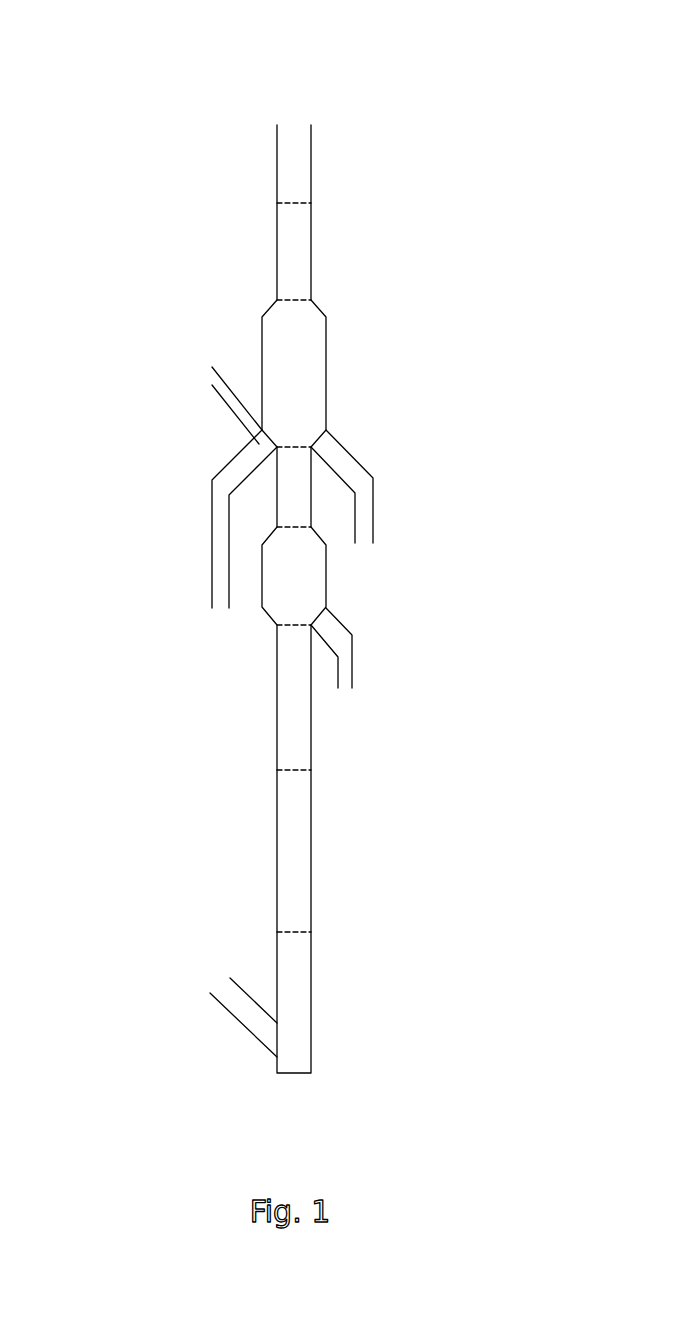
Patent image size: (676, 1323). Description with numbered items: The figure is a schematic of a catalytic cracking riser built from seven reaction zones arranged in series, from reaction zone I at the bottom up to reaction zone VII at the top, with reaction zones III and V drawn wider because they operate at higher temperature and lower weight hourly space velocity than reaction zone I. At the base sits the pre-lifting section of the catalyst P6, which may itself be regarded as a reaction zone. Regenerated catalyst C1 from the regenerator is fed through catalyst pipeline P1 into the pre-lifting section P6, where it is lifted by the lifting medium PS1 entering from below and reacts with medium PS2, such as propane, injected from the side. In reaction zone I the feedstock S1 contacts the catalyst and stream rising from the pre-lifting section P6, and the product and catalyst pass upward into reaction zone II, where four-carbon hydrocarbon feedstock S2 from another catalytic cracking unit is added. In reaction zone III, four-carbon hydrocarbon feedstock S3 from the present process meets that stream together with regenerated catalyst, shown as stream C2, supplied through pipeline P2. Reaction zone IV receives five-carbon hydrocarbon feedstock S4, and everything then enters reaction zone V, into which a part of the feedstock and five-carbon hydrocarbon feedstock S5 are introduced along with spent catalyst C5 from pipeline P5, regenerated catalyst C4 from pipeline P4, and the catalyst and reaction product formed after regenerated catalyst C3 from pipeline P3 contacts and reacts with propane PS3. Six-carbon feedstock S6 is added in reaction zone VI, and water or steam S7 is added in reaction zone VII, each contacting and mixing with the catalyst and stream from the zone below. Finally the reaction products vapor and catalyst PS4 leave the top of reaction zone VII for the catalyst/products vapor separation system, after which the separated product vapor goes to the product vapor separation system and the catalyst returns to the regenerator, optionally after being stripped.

The reaction zone I is at (294, 851).
The reaction zone II is at (294, 697).
The reaction zone III is at (294, 576).
The reaction zone IV is at (294, 487).
The reaction zone V is at (294, 373).
The reaction zone VI is at (294, 251).
The reaction zone VII is at (294, 164).
The feedstock S1 is at (312, 932).
The C4 hydrocarbons feedstock S2 is at (312, 770).
The C4 hydrocarbons feedstock S3 is at (327, 607).
The C5 hydrocarbons feedstock S4 is at (364, 547).
The C5 hydrocarbons feedstock S5 is at (326, 432).
The C6 feedstock S6 is at (312, 300).
The water or steam S7 is at (312, 203).
The catalyst pipeline P1 is at (204, 1022).
The pipeline P2 is at (387, 652).
The pipeline P3 is at (175, 530).
The pipeline P4 is at (397, 486).
The pipeline P5 is at (168, 405).
The pre-lifting section of the catalyst P6 is at (354, 1030).
The lifting medium PS1 is at (292, 1074).
The medium PS2 is at (312, 995).
The propane PS3 is at (211, 543).
The reaction products vapor and catalyst PS4 is at (292, 125).
The regenerated catalyst C1 is at (226, 991).
The stream C2 is at (378, 702).
The regenerated catalyst C3 is at (218, 593).
The regenerated catalyst C4 is at (426, 563).
The spent catalyst C5 is at (209, 371).